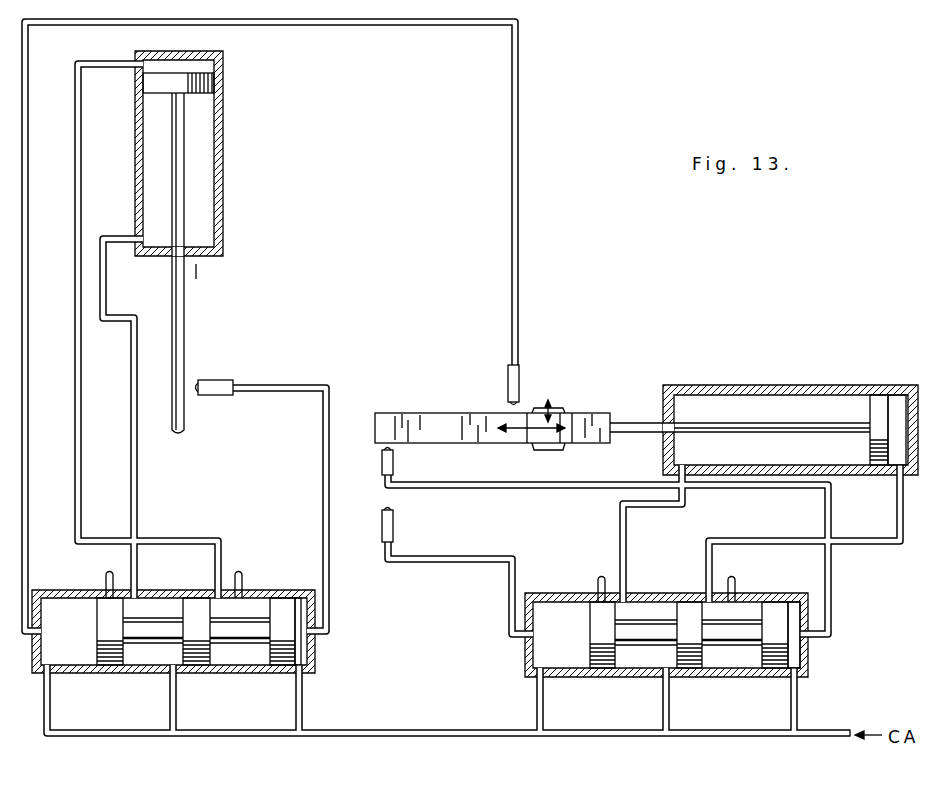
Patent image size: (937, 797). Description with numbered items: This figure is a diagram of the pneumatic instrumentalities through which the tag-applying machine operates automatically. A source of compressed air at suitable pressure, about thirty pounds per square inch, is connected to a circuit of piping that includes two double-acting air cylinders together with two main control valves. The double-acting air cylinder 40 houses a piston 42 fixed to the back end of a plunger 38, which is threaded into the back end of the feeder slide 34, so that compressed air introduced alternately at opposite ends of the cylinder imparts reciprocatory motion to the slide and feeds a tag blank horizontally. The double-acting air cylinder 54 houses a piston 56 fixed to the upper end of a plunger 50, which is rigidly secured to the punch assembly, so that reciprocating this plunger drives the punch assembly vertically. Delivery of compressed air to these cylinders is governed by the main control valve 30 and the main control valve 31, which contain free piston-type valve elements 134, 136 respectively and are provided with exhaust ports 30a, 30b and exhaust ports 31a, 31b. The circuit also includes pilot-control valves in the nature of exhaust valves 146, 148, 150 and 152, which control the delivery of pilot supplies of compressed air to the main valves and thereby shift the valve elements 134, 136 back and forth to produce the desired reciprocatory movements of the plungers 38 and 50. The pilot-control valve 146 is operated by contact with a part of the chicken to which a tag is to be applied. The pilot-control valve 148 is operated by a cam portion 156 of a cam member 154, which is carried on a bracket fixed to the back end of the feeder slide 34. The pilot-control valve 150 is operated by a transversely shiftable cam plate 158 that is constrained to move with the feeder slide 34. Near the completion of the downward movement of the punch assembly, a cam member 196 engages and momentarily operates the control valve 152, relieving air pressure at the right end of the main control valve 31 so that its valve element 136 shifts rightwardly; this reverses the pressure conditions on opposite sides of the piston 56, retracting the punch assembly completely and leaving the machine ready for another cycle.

The main control valve 30 is at (820, 660).
The exhaust port 30a is at (597, 582).
The exhaust port 30b is at (735, 585).
The main control valve 31 is at (70, 579).
The exhaust port 31a is at (105, 578).
The exhaust port 31b is at (242, 580).
The feeder slide 34 is at (450, 439).
The plunger 38 is at (630, 420).
The double-acting air cylinder 40 is at (800, 419).
The piston 42 is at (880, 400).
The plunger 50 is at (180, 297).
The double-acting air cylinder 54 is at (209, 136).
The piston 56 is at (210, 85).
The free piston-type valve element 134 is at (684, 612).
The free piston-type valve element 136 is at (108, 672).
The pilot-control valve 146 is at (393, 523).
The pilot-control valve 148 is at (393, 463).
The pilot-control valve 150 is at (519, 380).
The pilot-control valve 152 is at (227, 380).
The cam member 154 is at (565, 436).
The cam portion 156 is at (540, 448).
The cam plate 158 is at (560, 410).
The cam member 196 is at (196, 272).